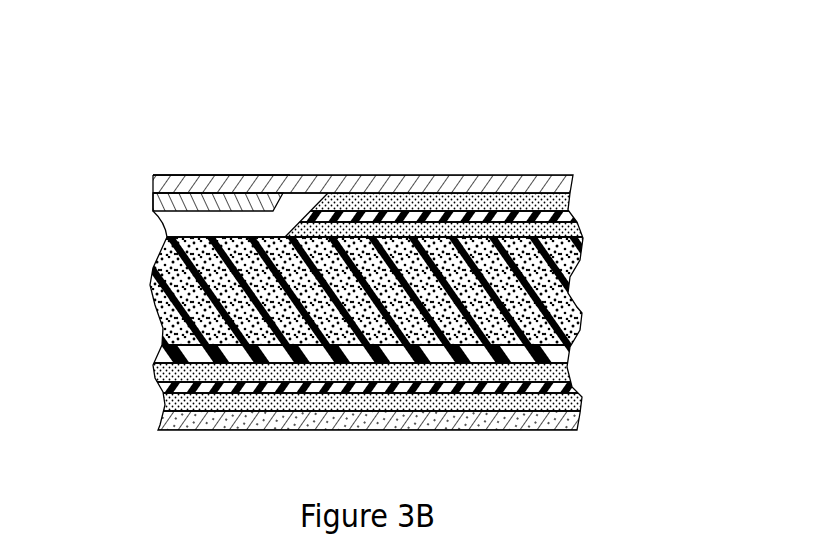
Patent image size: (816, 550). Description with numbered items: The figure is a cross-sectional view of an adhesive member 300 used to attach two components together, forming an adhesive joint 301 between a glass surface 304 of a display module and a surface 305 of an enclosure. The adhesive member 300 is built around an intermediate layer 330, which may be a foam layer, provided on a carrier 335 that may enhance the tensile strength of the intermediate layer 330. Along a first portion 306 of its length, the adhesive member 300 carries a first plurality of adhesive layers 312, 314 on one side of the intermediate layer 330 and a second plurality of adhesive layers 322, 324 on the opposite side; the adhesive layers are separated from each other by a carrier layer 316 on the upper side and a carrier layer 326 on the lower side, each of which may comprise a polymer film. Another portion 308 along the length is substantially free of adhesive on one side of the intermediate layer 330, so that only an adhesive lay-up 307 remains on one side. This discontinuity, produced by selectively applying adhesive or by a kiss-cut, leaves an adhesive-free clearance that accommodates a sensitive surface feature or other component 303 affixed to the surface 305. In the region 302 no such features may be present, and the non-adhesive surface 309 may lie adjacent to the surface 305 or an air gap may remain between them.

The adhesive member 300 is at (691, 95).
The adhesive joint 301 is at (109, 147).
The region 302 is at (153, 221).
The component 303 is at (153, 197).
The glass surface 304 is at (580, 418).
The surface 305 is at (573, 183).
The first portion 306 is at (491, 143).
The adhesive lay-up 307 is at (139, 364).
The portion 308 is at (224, 147).
The non-adhesive surface 309 is at (166, 237).
The adhesive layer 312 is at (565, 202).
The adhesive layer 314 is at (585, 233).
The carrier layer 316 is at (568, 218).
The adhesive layer 322 is at (567, 368).
The adhesive layer 324 is at (583, 402).
The carrier layer 326 is at (575, 388).
The intermediate layer 330 is at (565, 290).
The carrier 335 is at (567, 357).